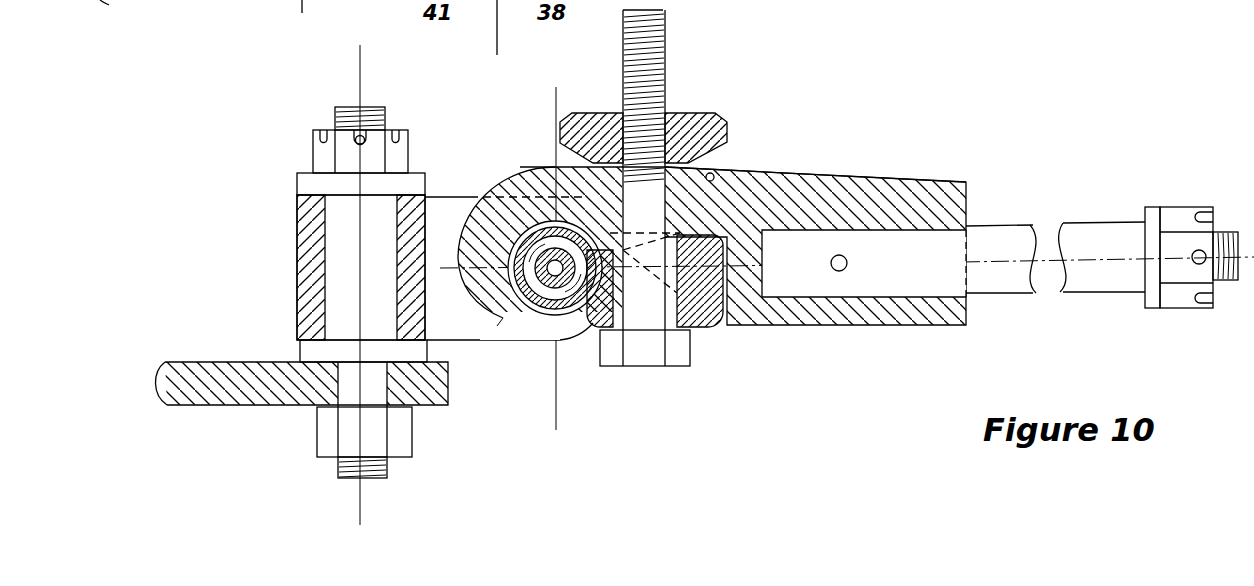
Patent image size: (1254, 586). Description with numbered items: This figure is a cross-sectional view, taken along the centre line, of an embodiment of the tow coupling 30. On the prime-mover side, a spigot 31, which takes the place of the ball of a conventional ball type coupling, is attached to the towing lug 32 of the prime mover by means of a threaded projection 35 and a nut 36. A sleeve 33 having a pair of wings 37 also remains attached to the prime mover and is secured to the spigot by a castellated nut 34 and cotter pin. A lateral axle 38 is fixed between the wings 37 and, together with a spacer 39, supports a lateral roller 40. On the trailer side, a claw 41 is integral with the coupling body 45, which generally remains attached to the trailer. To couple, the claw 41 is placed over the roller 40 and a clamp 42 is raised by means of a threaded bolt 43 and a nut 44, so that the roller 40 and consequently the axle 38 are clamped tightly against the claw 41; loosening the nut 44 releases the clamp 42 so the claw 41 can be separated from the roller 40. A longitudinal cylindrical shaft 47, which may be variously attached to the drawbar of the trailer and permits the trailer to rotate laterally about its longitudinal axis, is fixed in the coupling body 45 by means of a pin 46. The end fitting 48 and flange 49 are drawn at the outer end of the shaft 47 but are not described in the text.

The tow coupling 30 is at (705, 207).
The spigot 31 is at (338, 317).
The towing lug 32 is at (227, 368).
The sleeve 33 is at (307, 242).
The castellated nut 34 is at (322, 152).
The threaded projection 35 is at (338, 473).
The nut 36 is at (407, 433).
The wings 37 is at (443, 210).
The lateral axle 38 is at (567, 310).
The spacer 39 is at (502, 316).
The roller 40 is at (532, 315).
The claw 41 is at (533, 170).
The clamp 42 is at (613, 330).
The threaded bolt 43 is at (660, 93).
The nut 44 is at (718, 130).
The coupling body 45 is at (813, 177).
The pin 46 is at (839, 272).
The longitudinal cylindrical shaft 47 is at (1000, 283).
The end cap 48 is at (1185, 212).
The flange 49 is at (1153, 215).